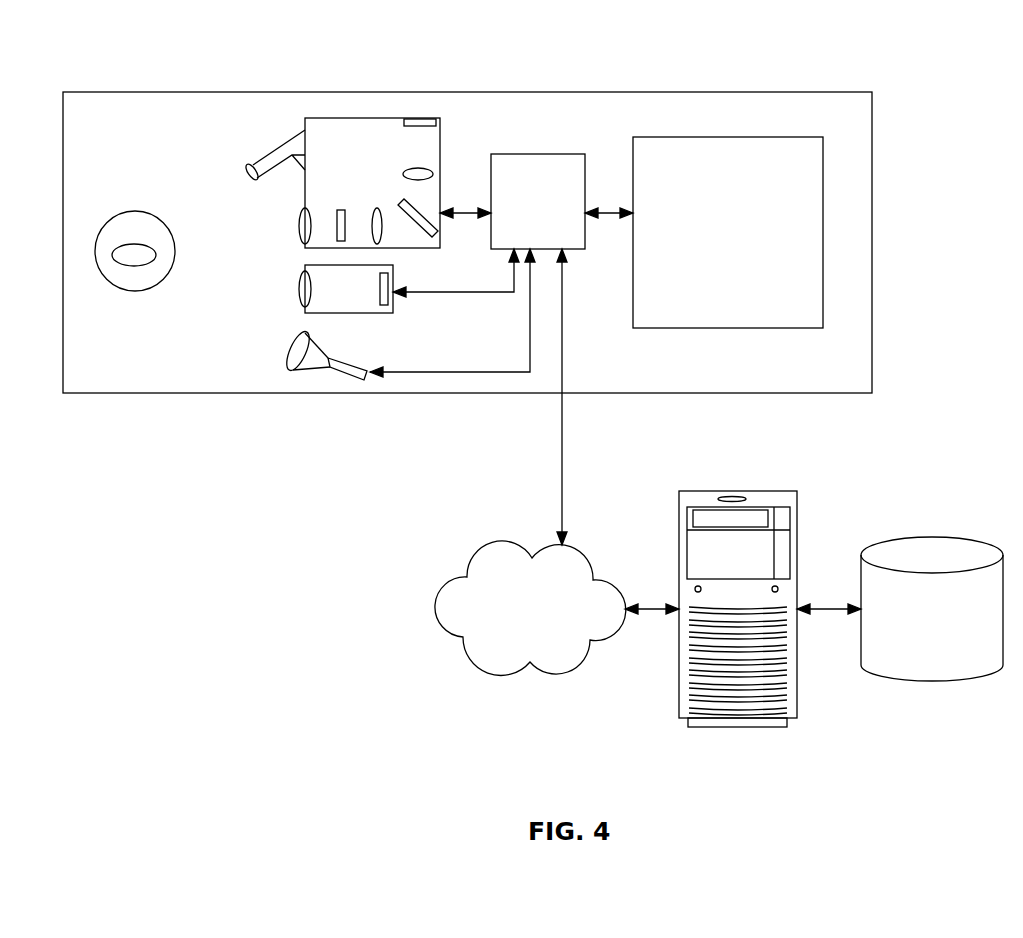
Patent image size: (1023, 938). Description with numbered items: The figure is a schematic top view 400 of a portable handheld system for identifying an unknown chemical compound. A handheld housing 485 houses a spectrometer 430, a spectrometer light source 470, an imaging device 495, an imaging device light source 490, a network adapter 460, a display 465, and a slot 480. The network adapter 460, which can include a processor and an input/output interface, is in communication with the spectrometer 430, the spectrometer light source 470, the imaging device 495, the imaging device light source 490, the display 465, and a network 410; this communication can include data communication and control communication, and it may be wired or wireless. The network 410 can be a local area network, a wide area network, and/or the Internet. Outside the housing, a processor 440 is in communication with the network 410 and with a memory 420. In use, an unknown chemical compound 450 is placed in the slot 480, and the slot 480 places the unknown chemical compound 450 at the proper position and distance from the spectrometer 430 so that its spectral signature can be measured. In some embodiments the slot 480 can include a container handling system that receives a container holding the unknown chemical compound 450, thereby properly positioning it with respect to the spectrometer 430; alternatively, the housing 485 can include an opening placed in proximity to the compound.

The top view 400 is at (343, 782).
The network 410 is at (433, 615).
The memory 420 is at (927, 535).
The spectrometer 430 is at (380, 118).
The processor 440 is at (732, 491).
The unknown chemical compound 450 is at (138, 267).
The network adapter 460 is at (546, 153).
The display 465 is at (823, 243).
The spectrometer light source 470 is at (272, 148).
The slot 480 is at (135, 212).
The handheld housing 485 is at (120, 393).
The imaging device light source 490 is at (317, 370).
The imaging device 495 is at (393, 315).